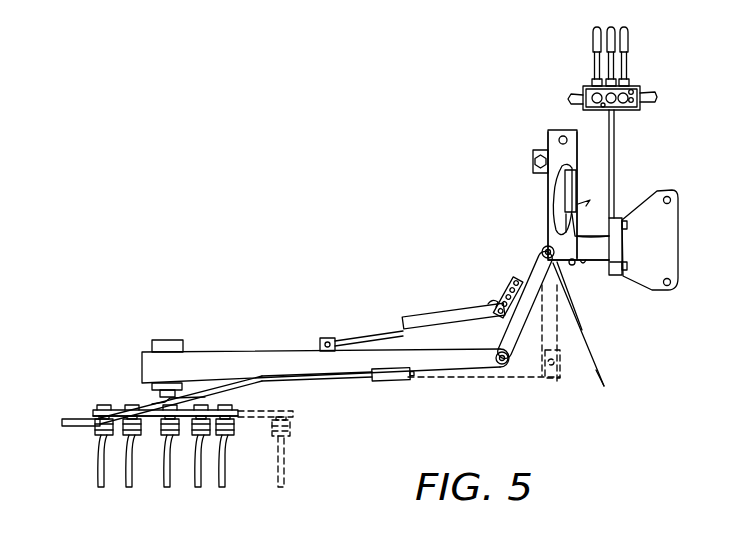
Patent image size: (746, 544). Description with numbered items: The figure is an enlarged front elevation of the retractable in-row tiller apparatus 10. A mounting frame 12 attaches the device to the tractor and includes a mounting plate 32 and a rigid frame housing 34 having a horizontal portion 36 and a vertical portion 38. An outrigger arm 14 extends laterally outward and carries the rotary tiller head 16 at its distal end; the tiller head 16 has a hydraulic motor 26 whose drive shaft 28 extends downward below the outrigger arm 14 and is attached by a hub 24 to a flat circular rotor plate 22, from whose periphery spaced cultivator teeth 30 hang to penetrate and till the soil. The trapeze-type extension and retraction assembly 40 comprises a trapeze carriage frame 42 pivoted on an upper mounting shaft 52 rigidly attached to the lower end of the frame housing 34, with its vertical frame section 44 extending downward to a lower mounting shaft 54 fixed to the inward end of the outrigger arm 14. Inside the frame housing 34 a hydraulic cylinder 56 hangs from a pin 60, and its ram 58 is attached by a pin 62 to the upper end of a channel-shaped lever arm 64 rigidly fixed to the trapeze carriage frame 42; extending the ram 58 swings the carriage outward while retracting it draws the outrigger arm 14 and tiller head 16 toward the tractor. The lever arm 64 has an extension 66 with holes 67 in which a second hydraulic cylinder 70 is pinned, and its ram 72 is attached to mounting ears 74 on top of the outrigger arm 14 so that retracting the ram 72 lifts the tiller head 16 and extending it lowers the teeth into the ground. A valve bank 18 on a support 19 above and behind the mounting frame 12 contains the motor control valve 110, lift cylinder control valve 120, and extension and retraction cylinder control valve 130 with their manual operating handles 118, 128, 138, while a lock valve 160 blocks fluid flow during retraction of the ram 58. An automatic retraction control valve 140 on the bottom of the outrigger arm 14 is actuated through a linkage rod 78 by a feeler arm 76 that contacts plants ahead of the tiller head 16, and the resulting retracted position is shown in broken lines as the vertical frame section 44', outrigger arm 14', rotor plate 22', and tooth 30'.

The retractable tiller apparatus 10 is at (200, 330).
The mounting frame 12 is at (630, 296).
The outrigger arm 14 is at (325, 353).
The outrigger arm (retracted position) 14' is at (495, 392).
The rotary tiller head 16 is at (97, 412).
The valve bank 18 is at (652, 92).
The support 19 is at (616, 160).
The rotor plate 22 is at (175, 401).
The rotor plate (retracted position) 22' is at (272, 404).
The hub 24 is at (145, 410).
The hydraulic motor 26 is at (163, 340).
The drive shaft 28 is at (195, 405).
The cultivator teeth 30 is at (172, 464).
The tooth (retracted position) 30' is at (298, 452).
The mounting plate 32 is at (678, 248).
The frame housing 34 is at (544, 233).
The horizontal portion 36 is at (613, 280).
The vertical portion 38 is at (548, 196).
The extension and retraction assembly 40 is at (565, 314).
The trapeze carriage frame 42 is at (610, 387).
The vertical frame section 44 is at (525, 332).
The vertical frame section (retracted position) 44' is at (575, 363).
The upper mounting shaft 52 is at (542, 252).
The lower mounting shaft 54 is at (500, 366).
The hydraulic cylinder 56 is at (573, 189).
The ram 58 is at (575, 228).
The pin 60 is at (560, 138).
The pin 62 is at (560, 272).
The lever arm 64 is at (562, 292).
The extension 66 is at (519, 287).
The holes 67 is at (505, 300).
The hydraulic cylinder 70 is at (446, 322).
The ram 72 is at (377, 336).
The mounting ears 74 is at (322, 338).
The feeler arm 76 is at (66, 419).
The linkage rod 78 is at (335, 382).
The motor control valve 110 is at (628, 88).
The manual operating handle 118 is at (628, 40).
The lift cylinder control valve 120 is at (598, 80).
The manual operating handle 128 is at (612, 32).
The extension and retraction cylinder control valve 130 is at (590, 90).
The manual operating handle 138 is at (597, 34).
The automatic retraction control valve 140 is at (392, 385).
The lock valve 160 is at (534, 160).